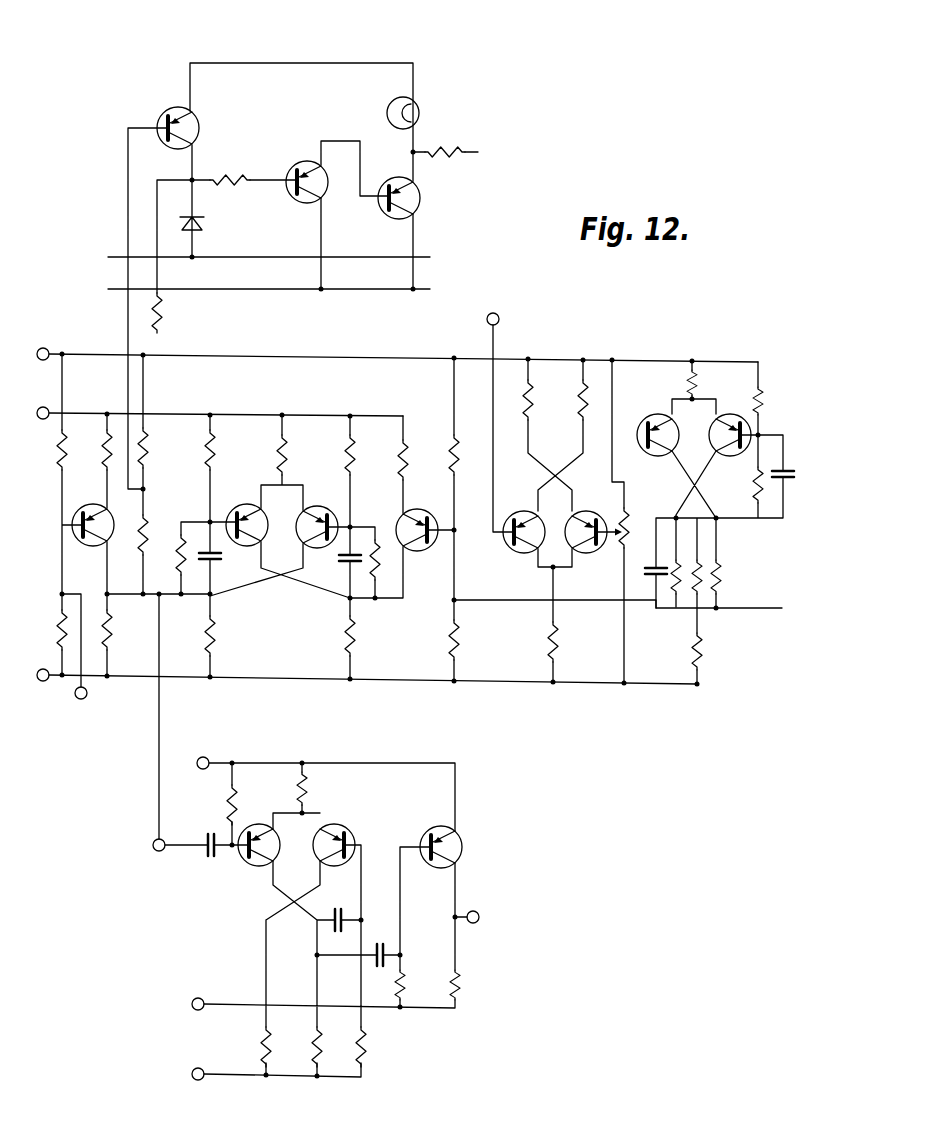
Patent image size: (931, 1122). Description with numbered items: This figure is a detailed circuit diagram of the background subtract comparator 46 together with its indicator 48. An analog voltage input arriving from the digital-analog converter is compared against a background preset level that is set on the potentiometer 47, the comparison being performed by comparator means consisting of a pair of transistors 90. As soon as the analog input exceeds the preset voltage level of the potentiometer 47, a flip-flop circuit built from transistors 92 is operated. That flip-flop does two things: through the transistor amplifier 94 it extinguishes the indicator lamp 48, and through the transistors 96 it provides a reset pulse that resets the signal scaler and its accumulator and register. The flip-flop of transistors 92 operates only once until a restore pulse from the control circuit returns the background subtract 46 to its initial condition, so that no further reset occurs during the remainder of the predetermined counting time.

The background subtract comparator 46 is at (412, 546).
The potentiometer 47 is at (619, 544).
The indicator lamp 48 is at (414, 107).
The transistors 90 is at (524, 501).
The transistors 92 is at (96, 506).
The transistor amplifier 94 is at (196, 118).
The transistors 96 is at (258, 824).